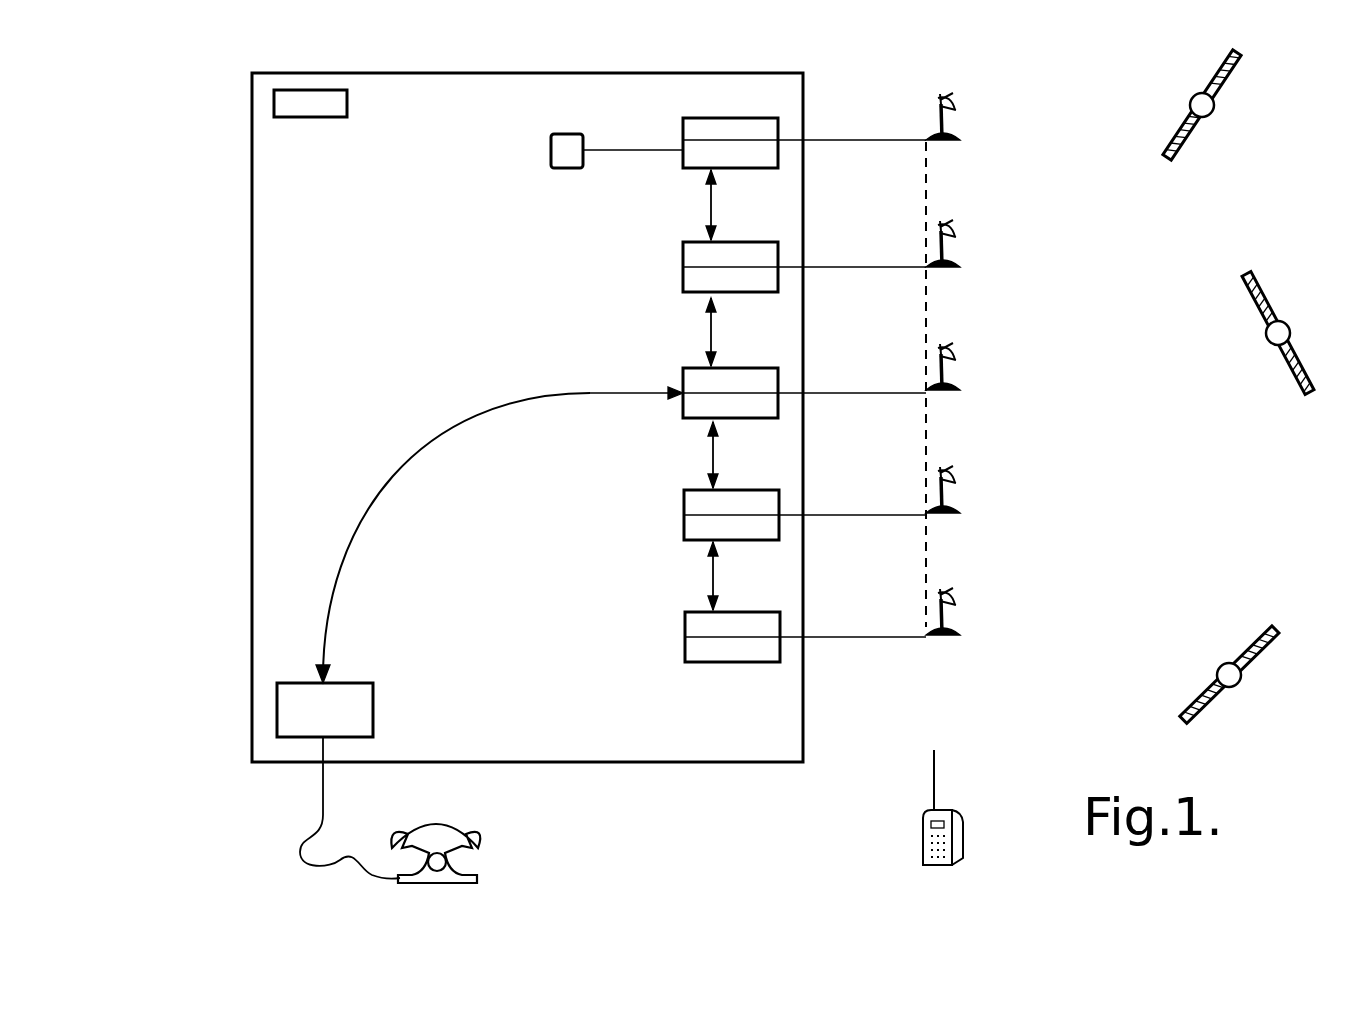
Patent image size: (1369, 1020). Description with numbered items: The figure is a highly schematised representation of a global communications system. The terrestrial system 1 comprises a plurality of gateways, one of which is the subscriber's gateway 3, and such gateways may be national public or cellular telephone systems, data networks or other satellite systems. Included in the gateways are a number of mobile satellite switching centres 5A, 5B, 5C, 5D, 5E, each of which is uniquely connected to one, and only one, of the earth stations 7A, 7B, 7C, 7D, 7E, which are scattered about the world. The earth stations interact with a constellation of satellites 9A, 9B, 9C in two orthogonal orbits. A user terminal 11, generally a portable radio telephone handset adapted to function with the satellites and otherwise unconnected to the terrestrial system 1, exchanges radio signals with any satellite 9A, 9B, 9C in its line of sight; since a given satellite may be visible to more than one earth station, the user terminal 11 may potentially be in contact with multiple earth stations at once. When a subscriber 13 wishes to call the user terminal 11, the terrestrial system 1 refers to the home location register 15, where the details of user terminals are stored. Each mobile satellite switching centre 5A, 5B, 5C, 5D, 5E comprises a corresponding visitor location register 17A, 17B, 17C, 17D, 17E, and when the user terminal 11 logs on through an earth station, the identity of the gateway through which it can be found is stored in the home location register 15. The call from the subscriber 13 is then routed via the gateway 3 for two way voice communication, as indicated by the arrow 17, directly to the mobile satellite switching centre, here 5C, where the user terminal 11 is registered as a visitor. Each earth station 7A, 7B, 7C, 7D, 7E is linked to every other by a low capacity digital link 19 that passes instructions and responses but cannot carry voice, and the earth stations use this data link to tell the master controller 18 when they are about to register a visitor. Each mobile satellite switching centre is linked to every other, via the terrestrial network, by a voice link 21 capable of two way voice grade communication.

The terrestrial system 1 is at (626, 763).
The gateway 3 is at (358, 683).
The mobile satellite switching centre 5A is at (683, 167).
The mobile satellite switching centre 5B is at (683, 297).
The mobile satellite switching centre 5C is at (683, 418).
The mobile satellite switching centre 5D is at (684, 541).
The mobile satellite switching centre 5E is at (685, 663).
The earth station 7A is at (950, 143).
The earth station 7B is at (950, 270).
The earth station 7C is at (950, 393).
The earth station 7D is at (952, 516).
The earth station 7E is at (950, 638).
The satellite 9A is at (1214, 108).
The satellite 9B is at (1290, 330).
The satellite 9C is at (1241, 678).
The user terminal 11 is at (960, 850).
The subscriber 13 is at (437, 884).
The home location register 15 is at (274, 106).
The arrow 17 is at (440, 454).
The visitor location register 17A is at (683, 124).
The visitor location register 17B is at (683, 247).
The visitor location register 17C is at (683, 380).
The visitor location register 17D is at (684, 502).
The visitor location register 17E is at (685, 626).
The master controller 18 is at (556, 148).
The low capacity digital link 19 is at (926, 212).
The voice link 21 is at (712, 200).